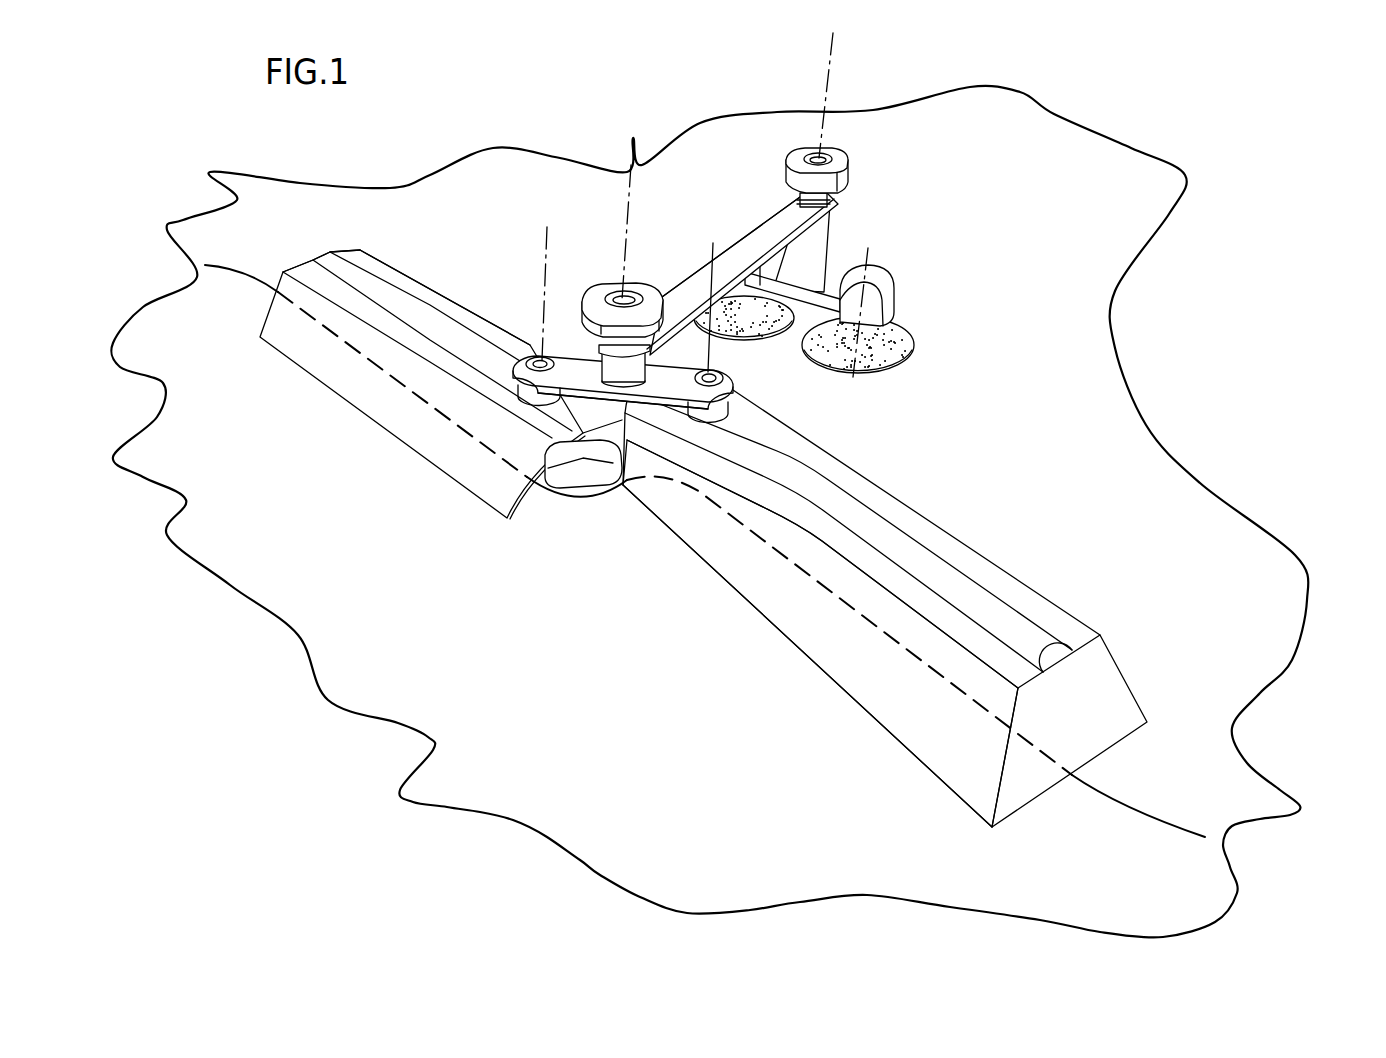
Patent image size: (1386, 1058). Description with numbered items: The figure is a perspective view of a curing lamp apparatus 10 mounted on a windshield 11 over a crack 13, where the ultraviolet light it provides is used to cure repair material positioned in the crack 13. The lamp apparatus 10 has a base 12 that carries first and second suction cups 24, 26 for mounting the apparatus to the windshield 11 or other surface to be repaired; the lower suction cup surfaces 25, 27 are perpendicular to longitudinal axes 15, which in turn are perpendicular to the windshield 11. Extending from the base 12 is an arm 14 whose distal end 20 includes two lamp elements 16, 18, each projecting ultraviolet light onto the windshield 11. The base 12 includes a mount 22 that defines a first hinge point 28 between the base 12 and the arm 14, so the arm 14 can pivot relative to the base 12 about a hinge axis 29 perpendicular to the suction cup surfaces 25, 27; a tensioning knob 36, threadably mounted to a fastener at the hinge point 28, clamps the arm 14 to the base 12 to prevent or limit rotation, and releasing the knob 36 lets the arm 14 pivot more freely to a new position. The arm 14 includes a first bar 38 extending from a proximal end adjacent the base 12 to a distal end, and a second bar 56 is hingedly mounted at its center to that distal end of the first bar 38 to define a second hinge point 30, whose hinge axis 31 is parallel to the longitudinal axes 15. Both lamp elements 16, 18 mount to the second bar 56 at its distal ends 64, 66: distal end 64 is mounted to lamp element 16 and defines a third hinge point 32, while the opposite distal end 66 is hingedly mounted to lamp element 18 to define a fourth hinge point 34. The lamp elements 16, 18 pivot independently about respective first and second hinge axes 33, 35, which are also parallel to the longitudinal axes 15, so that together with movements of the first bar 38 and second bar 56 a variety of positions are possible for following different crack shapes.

The lamp apparatus 10 is at (942, 488).
The windshield 11 is at (437, 583).
The base 12 is at (897, 292).
The crack 13 is at (250, 280).
The arm 14 is at (690, 277).
The longitudinal axes 15 is at (754, 218).
The lamp element 16 is at (1108, 648).
The lamp element 18 is at (373, 253).
The distal end 20 is at (607, 290).
The mount 22 is at (827, 233).
The suction cup 24 is at (917, 347).
The suction cup surface 25 is at (887, 375).
The suction cup 26 is at (767, 335).
The suction cup surface 27 is at (733, 332).
The first hinge point 28 is at (827, 207).
The hinge axis 29 is at (833, 57).
The second hinge point 30 is at (630, 373).
The hinge axis 31 is at (632, 192).
The third hinge point 32 is at (710, 412).
The first hinge axis 33 is at (713, 247).
The fourth hinge point 34 is at (513, 390).
The second hinge axis 35 is at (547, 240).
The tensioning knob 36 is at (847, 167).
The first bar 38 is at (777, 212).
The second bar 56 is at (733, 387).
The distal end 64 is at (693, 397).
The distal end 66 is at (540, 383).